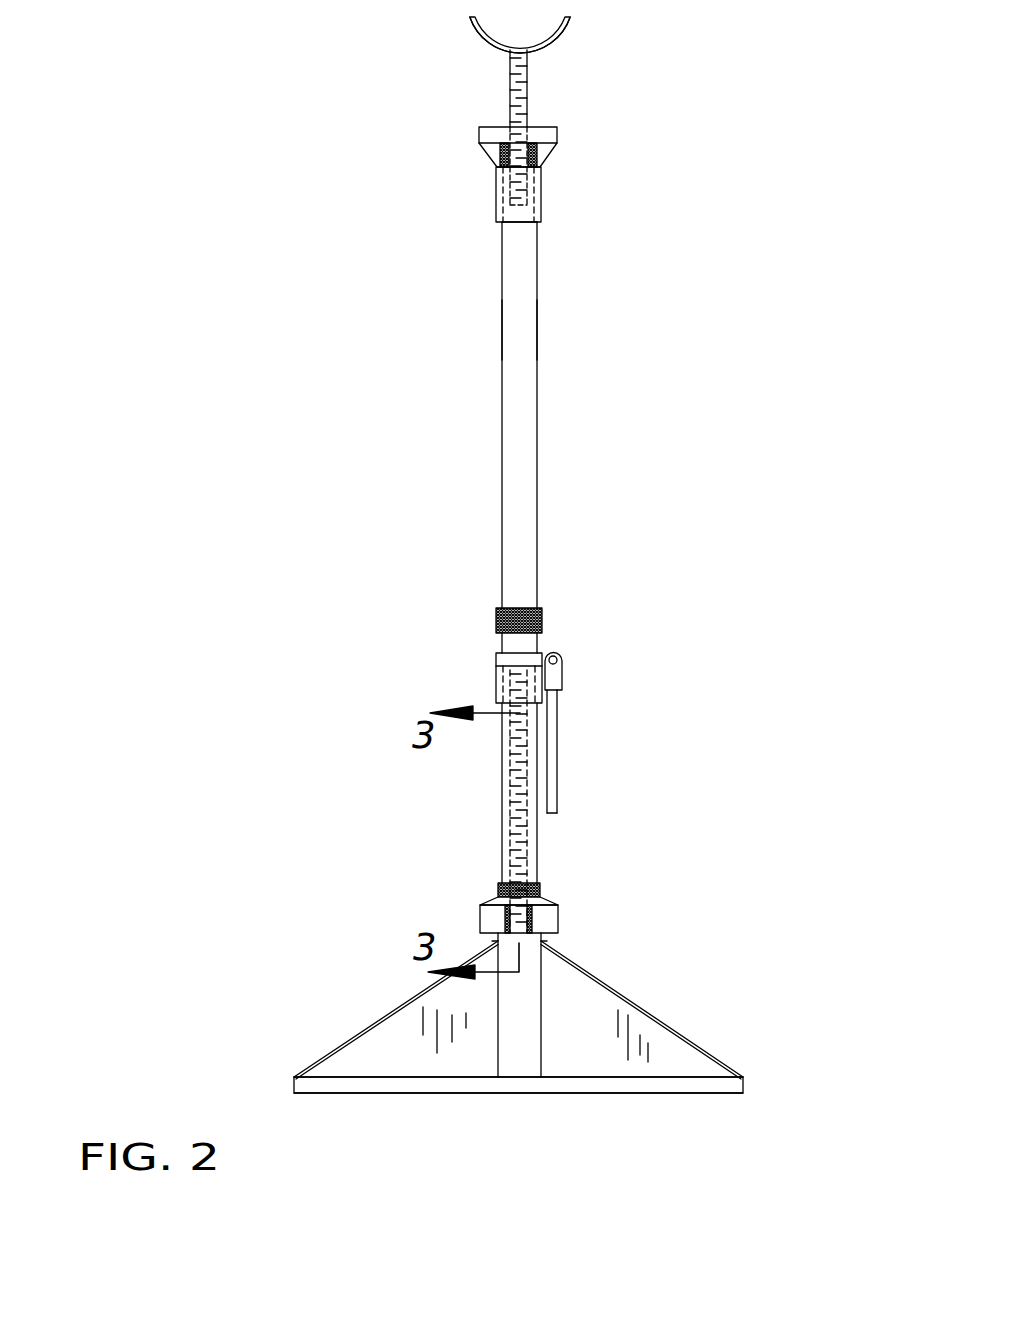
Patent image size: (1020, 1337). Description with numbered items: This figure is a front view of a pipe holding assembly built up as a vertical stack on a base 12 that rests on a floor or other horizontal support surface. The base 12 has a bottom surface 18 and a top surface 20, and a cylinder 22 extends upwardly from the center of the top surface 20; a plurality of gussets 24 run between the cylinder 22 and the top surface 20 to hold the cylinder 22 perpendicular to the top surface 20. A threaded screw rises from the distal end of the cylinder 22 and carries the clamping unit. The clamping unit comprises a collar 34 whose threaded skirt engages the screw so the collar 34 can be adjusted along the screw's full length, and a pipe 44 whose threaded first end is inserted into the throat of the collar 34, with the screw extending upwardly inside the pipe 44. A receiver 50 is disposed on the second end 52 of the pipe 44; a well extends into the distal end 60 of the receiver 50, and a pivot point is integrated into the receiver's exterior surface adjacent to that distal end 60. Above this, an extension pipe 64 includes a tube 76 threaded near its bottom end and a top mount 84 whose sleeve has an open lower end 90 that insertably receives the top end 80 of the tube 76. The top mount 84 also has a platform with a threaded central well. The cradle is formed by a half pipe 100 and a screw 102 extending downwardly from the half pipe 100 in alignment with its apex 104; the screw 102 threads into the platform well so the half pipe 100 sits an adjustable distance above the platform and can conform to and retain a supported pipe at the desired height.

The base 12 is at (745, 1085).
The bottom surface 18 is at (715, 1093).
The top surface 20 is at (673, 1077).
The cylinder 22 is at (522, 1057).
The gussets 24 is at (383, 1015).
The collar 34 is at (480, 904).
The pipe 44 is at (503, 789).
The receiver 50 is at (497, 680).
The second end 52 is at (528, 665).
The distal end 60 is at (507, 653).
The extension pipe 64 is at (470, 333).
The tube 76 is at (537, 382).
The top end 80 is at (540, 165).
The top mount 84 is at (470, 190).
The lower end 90 is at (522, 222).
The half pipe 100 is at (468, 30).
The screw 102 is at (510, 88).
The apex 104 is at (528, 73).